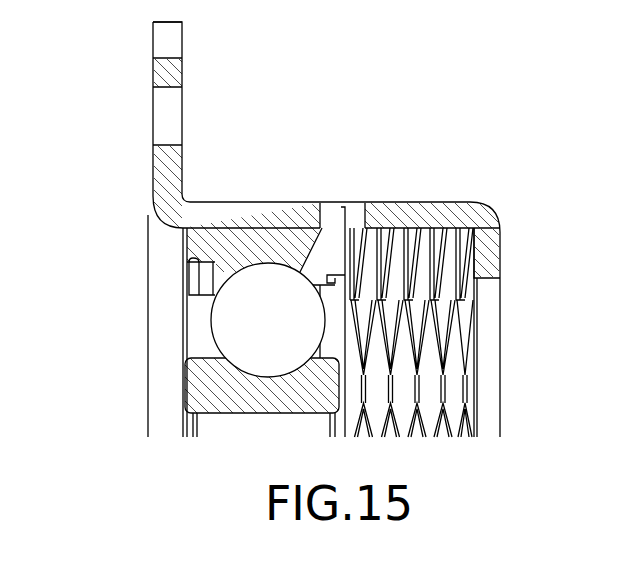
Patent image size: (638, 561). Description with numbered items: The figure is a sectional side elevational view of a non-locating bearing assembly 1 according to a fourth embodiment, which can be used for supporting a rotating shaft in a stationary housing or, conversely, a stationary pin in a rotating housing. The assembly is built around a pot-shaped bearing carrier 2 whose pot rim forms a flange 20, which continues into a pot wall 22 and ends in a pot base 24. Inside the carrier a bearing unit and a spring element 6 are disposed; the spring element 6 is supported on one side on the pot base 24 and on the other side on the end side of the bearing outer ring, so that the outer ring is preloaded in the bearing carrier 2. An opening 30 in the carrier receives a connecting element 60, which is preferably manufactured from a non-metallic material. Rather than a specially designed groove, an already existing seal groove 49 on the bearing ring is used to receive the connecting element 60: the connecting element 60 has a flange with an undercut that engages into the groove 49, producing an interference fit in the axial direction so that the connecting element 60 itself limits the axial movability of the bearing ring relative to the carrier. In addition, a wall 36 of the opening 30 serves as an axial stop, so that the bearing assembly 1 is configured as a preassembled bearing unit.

The non-locating bearing assembly 1 is at (300, 76).
The bearing carrier 2 is at (130, 48).
The spring element 6 is at (440, 398).
The flange 20 is at (158, 168).
The pot wall 22 is at (214, 218).
The pot base 24 is at (486, 256).
The opening 30 is at (333, 222).
The wall 36 is at (310, 222).
The seal groove 49 is at (340, 268).
The connecting element 60 is at (350, 222).